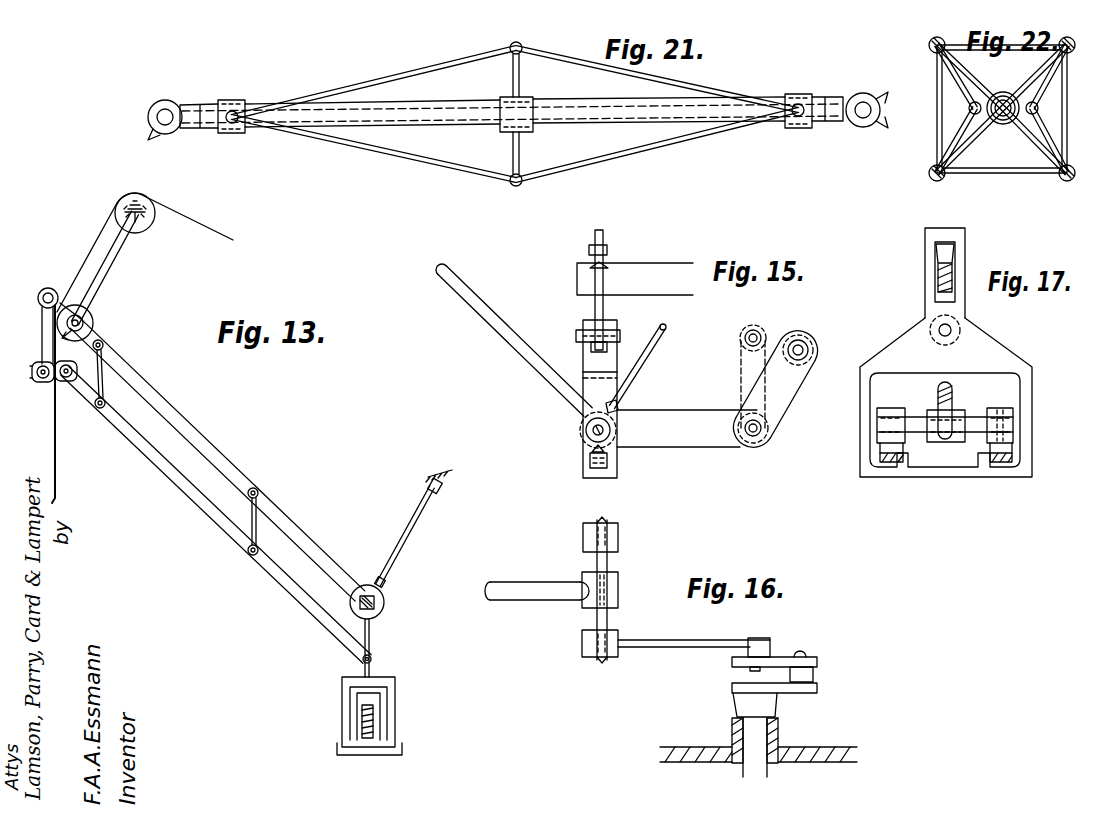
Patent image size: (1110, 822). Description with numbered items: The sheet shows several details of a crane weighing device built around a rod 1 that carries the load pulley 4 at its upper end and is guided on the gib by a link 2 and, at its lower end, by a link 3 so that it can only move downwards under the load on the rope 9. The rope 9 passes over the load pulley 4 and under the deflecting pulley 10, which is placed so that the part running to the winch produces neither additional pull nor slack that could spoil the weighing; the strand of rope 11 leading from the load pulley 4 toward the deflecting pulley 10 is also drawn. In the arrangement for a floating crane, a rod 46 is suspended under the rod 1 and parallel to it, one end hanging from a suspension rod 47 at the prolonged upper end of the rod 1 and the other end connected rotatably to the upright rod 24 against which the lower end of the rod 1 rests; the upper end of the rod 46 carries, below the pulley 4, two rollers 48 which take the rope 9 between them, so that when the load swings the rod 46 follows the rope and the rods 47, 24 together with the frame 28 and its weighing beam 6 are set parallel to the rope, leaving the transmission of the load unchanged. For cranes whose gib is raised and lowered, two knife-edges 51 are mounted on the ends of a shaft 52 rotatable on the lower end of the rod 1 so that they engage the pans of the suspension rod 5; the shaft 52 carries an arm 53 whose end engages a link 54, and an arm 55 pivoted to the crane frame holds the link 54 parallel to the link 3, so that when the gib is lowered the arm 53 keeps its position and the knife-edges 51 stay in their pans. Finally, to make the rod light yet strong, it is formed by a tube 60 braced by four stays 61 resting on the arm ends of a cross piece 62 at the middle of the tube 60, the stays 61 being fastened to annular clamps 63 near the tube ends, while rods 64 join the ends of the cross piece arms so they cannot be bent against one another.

In FIG. 13, the rod 1 is at (213, 450).
In FIG. 15, the rod 1 is at (527, 365).
In FIG. 16, the rod 1 is at (522, 594).
In FIG. 17, the rod 1 is at (948, 412).
In FIG. 13, the link 2 is at (102, 277).
In FIG. 13, the link 3 is at (408, 527).
In FIG. 15, the link 3 is at (645, 355).
In FIG. 13, the load pulley 4 is at (92, 317).
In FIG. 15, the suspension rod 5 is at (590, 362).
In FIG. 17, the suspension rod 5 is at (985, 346).
In FIG. 13, the scale beam 6 is at (363, 732).
In FIG. 13, the rope 9 is at (55, 455).
In FIG. 13, the deflecting pulley 10 is at (142, 230).
In FIG. 13, the rope 11 is at (90, 258).
In FIG. 13, the suspension rod 24 is at (372, 640).
In FIG. 13, the frame 28 is at (348, 698).
In FIG. 13, the rod 46 is at (210, 503).
In FIG. 13, the suspension rod 47 is at (45, 337).
In FIG. 13, the rollers 48 is at (66, 383).
In FIG. 15, the knife-edges 51 is at (588, 478).
In FIG. 16, the knife-edges 51 is at (582, 676).
In FIG. 17, the knife-edges 51 is at (1010, 450).
In FIG. 15, the shaft 52 is at (587, 440).
In FIG. 16, the shaft 52 is at (597, 560).
In FIG. 17, the shaft 52 is at (912, 420).
In FIG. 15, the arm 53 is at (678, 413).
In FIG. 16, the arm 53 is at (688, 647).
In FIG. 17, the arm 53 is at (1000, 420).
In FIG. 15, the link 54 is at (762, 350).
In FIG. 16, the link 54 is at (780, 660).
In FIG. 16, the arm 55 is at (803, 690).
In FIG. 21, the tube 60 is at (437, 117).
In FIG. 22, the tube 60 is at (1007, 117).
In FIG. 21, the stays 61 is at (380, 77).
In FIG. 22, the stays 61 is at (952, 75).
In FIG. 21, the cross piece 62 is at (522, 132).
In FIG. 22, the cross piece 62 is at (975, 80).
In FIG. 21, the annular clamps 63 is at (230, 98).
In FIG. 22, the annular clamps 63 is at (1038, 108).
In FIG. 22, the rods 64 is at (1044, 108).